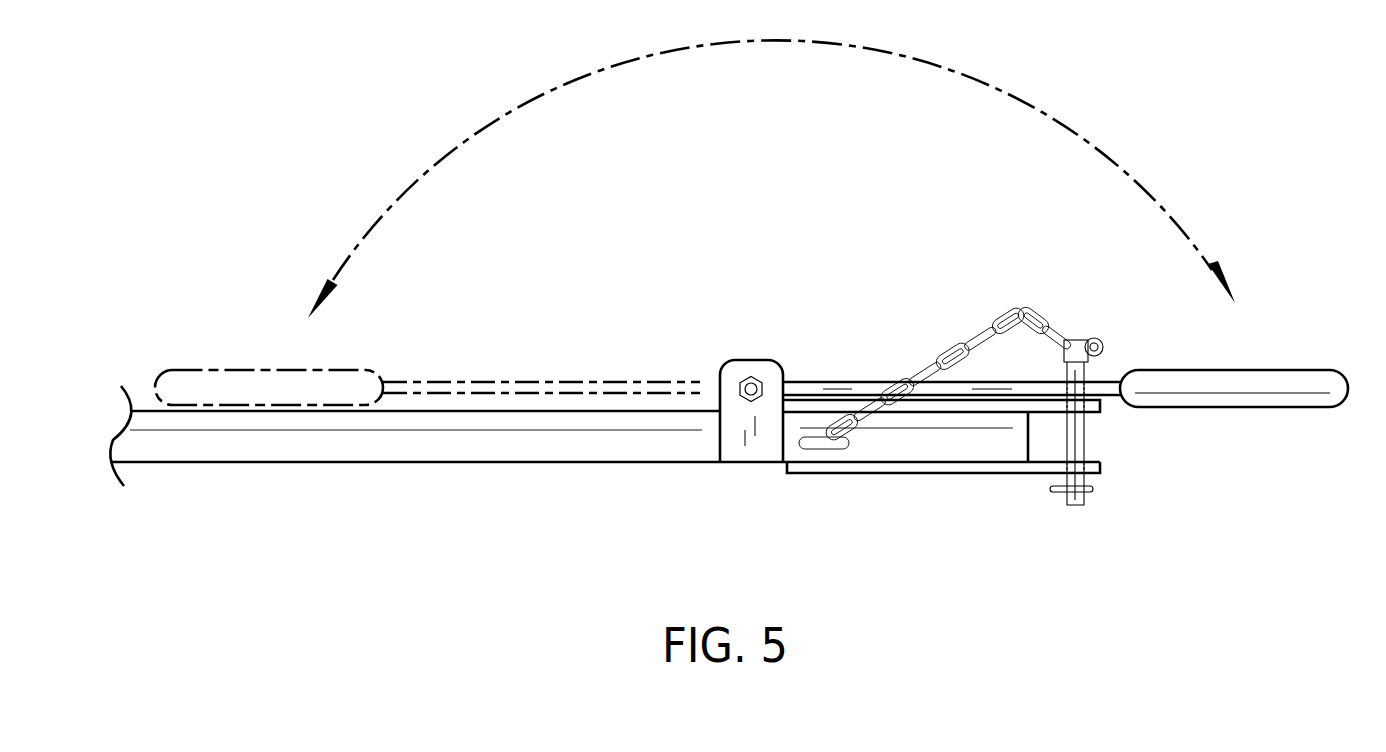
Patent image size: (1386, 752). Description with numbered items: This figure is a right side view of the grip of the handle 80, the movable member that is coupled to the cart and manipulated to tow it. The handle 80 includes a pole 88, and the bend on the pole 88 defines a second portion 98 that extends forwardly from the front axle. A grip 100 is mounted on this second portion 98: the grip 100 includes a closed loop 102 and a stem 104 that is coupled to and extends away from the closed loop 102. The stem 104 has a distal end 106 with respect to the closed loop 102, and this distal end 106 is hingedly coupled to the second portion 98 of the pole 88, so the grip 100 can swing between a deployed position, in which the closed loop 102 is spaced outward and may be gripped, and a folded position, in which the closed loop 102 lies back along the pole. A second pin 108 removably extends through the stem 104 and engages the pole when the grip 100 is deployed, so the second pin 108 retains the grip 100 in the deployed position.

The handle 80 is at (425, 545).
The pole 88 is at (630, 463).
The second portion 98 is at (278, 463).
The grip 100 is at (1318, 316).
The closed loop 102 is at (1288, 400).
The stem 104 is at (958, 382).
The distal end 106 is at (783, 360).
The second pin 108 is at (1082, 348).